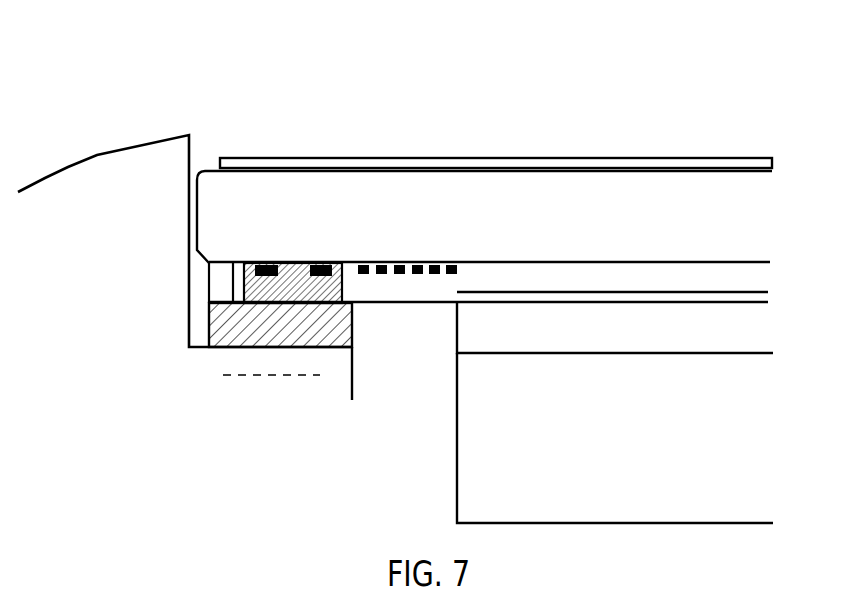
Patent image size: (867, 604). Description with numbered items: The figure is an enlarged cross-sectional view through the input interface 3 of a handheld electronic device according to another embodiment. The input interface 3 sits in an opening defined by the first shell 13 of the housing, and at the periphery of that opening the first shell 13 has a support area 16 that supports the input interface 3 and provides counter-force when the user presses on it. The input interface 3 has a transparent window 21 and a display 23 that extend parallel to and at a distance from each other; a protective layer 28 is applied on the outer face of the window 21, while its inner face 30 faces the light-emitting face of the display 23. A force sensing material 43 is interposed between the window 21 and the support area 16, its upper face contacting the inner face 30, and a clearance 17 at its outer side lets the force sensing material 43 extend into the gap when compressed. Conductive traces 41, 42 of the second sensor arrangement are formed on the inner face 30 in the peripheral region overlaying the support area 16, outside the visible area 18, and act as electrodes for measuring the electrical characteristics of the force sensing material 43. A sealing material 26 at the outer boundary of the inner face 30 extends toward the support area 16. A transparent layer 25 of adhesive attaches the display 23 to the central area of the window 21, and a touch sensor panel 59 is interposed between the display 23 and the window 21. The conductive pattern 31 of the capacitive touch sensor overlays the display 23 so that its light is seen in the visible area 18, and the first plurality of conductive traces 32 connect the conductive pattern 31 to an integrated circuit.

The input interface 3 is at (717, 60).
The first shell 13 is at (70, 176).
The support area 16 is at (279, 362).
The clearance 17 is at (241, 290).
The visible area 18 is at (475, 132).
The transparent window 21 is at (712, 232).
The display 23 is at (713, 452).
The transparent layer 25 is at (748, 275).
The sealing material 26 is at (209, 270).
The protective layer 28 is at (761, 163).
The inner face 30 is at (741, 258).
The conductive pattern 31 is at (739, 296).
The first plurality of conductive traces 32 is at (394, 295).
The conductive trace 41 is at (260, 264).
The conductive trace 42 is at (315, 264).
The force sensing material 43 is at (290, 273).
The touch sensor panel 59 is at (712, 344).